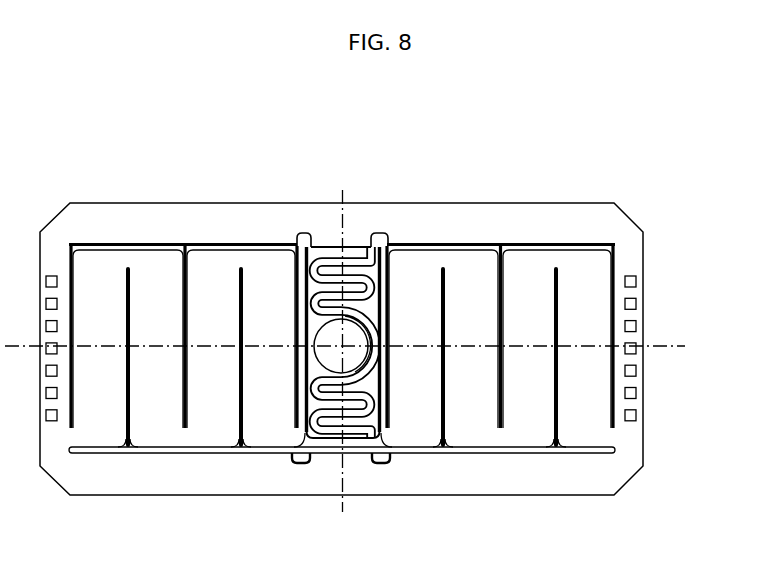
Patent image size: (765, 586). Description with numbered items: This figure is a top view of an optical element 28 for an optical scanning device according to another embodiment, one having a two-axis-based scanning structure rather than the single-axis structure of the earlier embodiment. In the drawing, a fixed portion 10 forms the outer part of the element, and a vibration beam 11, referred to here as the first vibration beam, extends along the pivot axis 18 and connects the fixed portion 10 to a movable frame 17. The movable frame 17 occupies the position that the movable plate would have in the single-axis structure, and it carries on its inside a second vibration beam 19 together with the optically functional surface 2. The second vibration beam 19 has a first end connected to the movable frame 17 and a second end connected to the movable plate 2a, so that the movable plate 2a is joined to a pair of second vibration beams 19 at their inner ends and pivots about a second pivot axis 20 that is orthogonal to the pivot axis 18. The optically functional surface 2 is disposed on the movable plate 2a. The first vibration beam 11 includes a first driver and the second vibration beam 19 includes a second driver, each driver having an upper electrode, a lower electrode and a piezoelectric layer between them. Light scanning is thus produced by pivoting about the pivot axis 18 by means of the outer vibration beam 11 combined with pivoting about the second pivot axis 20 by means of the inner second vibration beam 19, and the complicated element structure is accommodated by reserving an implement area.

The optical element 28 is at (640, 128).
The fixed portion 10 is at (172, 478).
The vibration beam 11 is at (218, 285).
The movable frame 17 is at (383, 250).
The second vibration beam 19 is at (327, 282).
The optically functional surface 2 is at (335, 358).
The movable plate 2a is at (318, 375).
The pivot axis 18 is at (361, 346).
The second pivot axis 20 is at (343, 366).